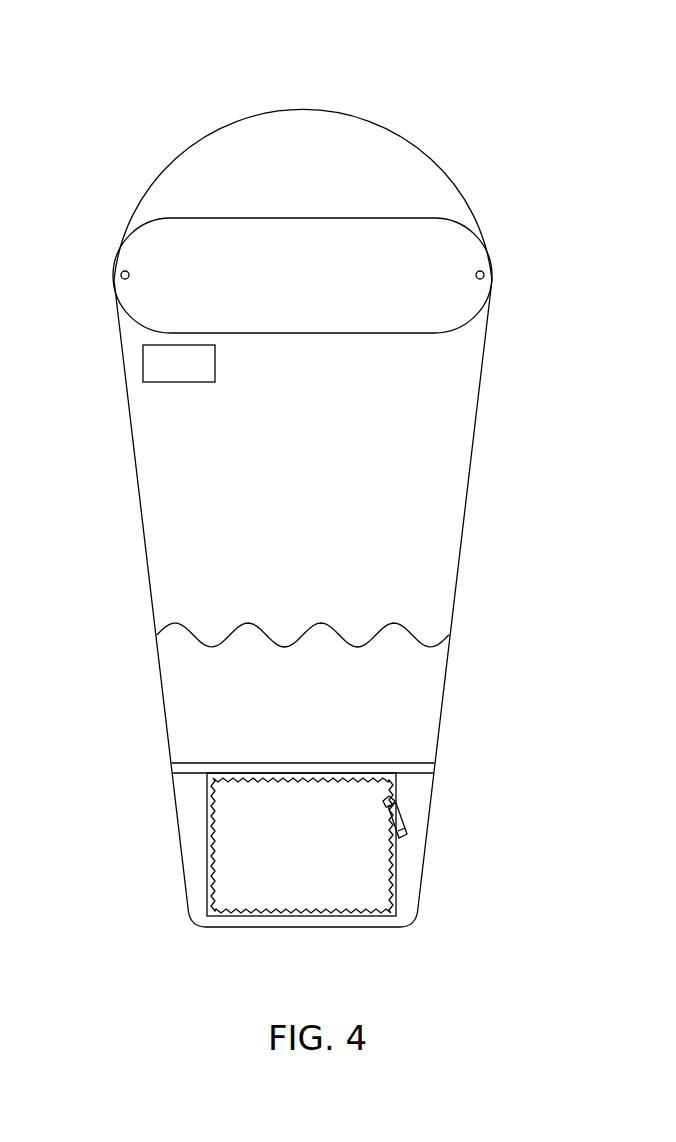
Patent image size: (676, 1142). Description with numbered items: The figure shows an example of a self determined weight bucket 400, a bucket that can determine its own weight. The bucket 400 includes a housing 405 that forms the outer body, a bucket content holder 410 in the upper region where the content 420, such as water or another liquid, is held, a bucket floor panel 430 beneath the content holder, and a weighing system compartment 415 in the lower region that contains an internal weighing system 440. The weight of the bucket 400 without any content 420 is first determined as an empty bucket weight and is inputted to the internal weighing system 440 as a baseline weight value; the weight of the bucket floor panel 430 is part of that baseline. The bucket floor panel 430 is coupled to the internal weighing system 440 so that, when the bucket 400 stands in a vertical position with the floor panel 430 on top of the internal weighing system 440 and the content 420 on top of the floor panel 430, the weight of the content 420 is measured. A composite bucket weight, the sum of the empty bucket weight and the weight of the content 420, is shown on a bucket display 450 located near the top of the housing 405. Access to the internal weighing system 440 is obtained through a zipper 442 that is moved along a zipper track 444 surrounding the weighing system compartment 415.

The self determined weight bucket 400 is at (112, 118).
The housing 405 is at (142, 508).
The bucket content holder 410 is at (330, 446).
The weighing system compartment 415 is at (410, 797).
The content 420 is at (331, 706).
The bucket floor panel 430 is at (193, 763).
The internal weighing system 440 is at (230, 838).
The zipper 442 is at (408, 832).
The zipper track 444 is at (400, 878).
The bucket display 450 is at (216, 366).